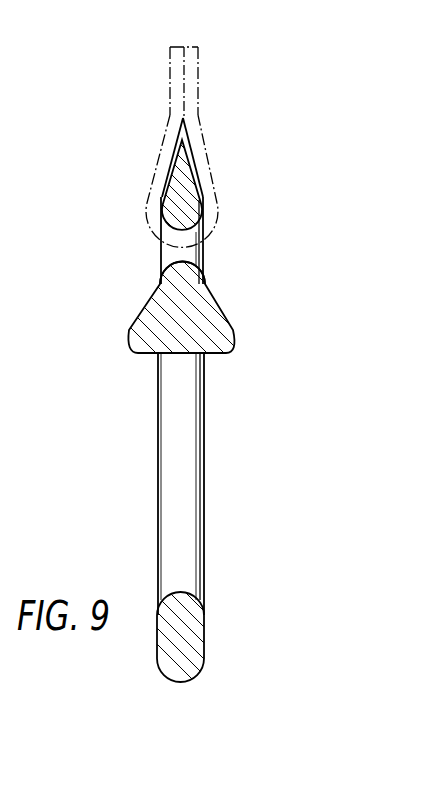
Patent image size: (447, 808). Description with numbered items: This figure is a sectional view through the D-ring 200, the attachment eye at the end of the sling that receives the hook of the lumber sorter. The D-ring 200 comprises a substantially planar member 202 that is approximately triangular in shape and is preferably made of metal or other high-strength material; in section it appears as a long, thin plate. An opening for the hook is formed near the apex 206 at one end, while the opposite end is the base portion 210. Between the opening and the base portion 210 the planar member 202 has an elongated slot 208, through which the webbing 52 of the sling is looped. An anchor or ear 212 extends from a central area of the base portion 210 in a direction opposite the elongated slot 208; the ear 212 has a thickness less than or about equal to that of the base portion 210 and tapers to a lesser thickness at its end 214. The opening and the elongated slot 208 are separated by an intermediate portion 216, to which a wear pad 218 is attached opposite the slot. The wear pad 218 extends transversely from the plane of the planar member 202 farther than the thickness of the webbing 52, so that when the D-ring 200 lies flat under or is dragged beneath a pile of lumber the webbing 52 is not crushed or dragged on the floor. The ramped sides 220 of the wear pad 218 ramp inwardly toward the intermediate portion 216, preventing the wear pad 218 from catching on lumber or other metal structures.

The webbing 52 is at (168, 67).
The D-ring 200 is at (143, 427).
The planar member 202 is at (204, 513).
The apex 206 is at (205, 649).
The elongated slot 208 is at (160, 256).
The base portion 210 is at (204, 201).
The ear 212 is at (207, 160).
The end of ear 214 is at (166, 138).
The intermediate portion 216 is at (206, 278).
The wear pad 218 is at (210, 342).
The ramped sides 220 is at (143, 312).